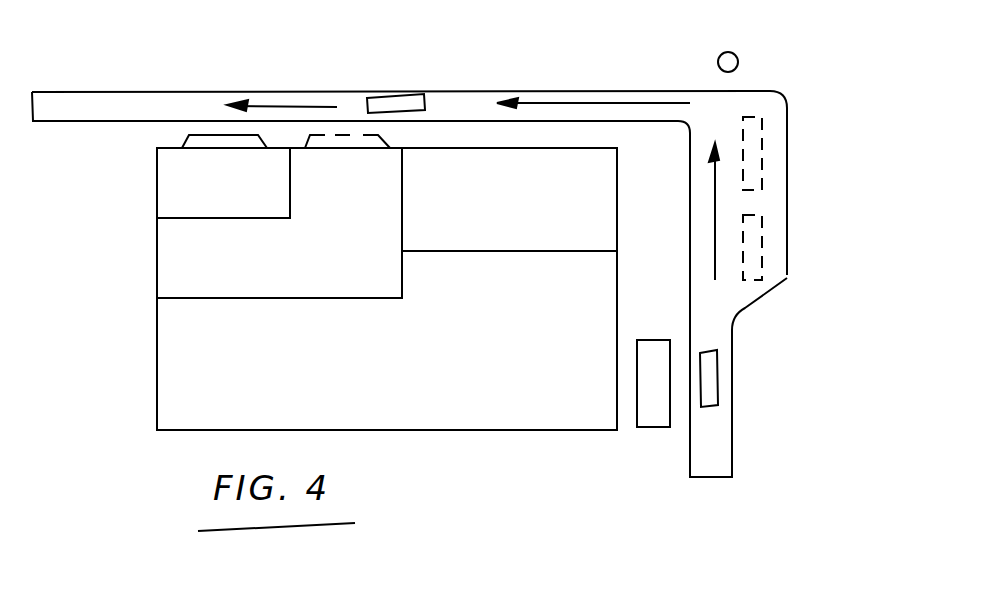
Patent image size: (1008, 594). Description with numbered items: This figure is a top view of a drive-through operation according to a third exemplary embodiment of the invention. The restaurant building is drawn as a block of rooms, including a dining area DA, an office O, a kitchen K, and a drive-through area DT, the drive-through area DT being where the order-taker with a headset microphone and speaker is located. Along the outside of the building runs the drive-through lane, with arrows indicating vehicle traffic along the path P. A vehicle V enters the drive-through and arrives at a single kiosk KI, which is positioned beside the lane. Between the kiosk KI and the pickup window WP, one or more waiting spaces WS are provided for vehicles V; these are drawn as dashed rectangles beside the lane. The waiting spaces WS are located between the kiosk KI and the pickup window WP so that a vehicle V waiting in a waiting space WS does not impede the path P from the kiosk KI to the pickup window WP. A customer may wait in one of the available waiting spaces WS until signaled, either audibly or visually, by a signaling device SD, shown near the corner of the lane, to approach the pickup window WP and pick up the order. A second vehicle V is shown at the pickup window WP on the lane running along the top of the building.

The dining area DA is at (387, 289).
The drive-through area DT is at (223, 183).
The kitchen K is at (279, 223).
The office O is at (509, 224).
The pickup window WP is at (202, 133).
The vehicle V is at (417, 88).
The signaling device SD is at (738, 57).
The waiting spaces WS is at (763, 173).
The path P is at (715, 270).
The kiosk KI is at (648, 430).